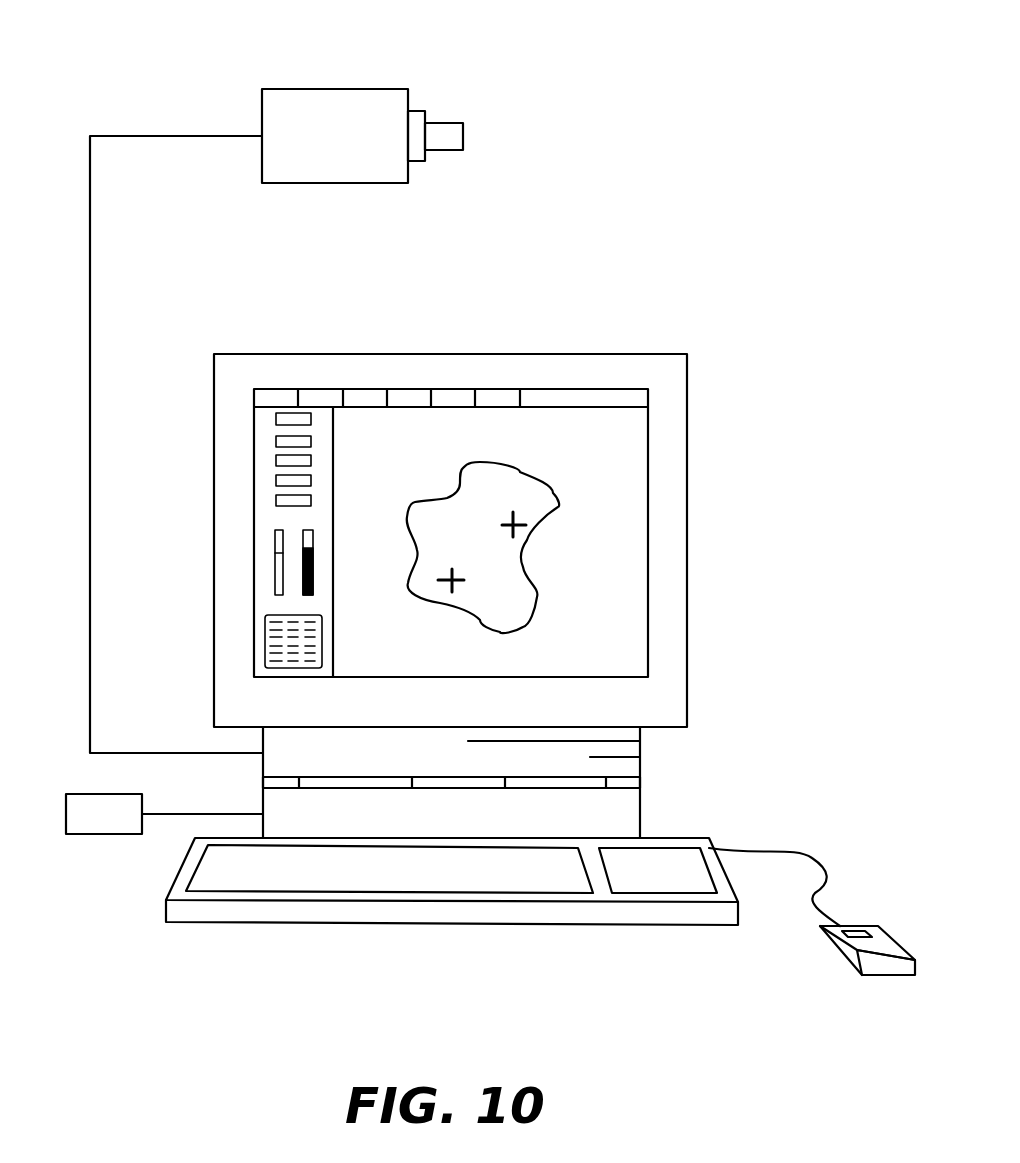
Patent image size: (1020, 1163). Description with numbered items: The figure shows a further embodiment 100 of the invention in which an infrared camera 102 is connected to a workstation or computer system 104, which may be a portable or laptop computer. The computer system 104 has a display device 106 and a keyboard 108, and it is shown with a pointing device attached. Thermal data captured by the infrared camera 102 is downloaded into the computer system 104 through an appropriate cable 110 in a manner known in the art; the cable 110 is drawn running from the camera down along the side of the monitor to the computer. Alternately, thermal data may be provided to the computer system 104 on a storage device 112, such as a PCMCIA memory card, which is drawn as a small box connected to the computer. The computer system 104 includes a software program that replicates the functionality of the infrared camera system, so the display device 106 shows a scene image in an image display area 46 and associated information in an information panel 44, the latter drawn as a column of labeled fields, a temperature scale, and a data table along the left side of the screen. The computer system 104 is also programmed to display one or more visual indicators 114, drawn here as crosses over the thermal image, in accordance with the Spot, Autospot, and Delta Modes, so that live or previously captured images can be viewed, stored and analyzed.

The further embodiment 100 is at (680, 115).
The infrared camera 102 is at (326, 110).
The computer system 104 is at (625, 812).
The display device 106 is at (668, 530).
The keyboard 108 is at (220, 906).
The cable 110 is at (147, 136).
The storage device 112 is at (106, 818).
The visual indicators 114 is at (458, 571).
The information panel 44 is at (268, 413).
The image display area 46 is at (572, 415).